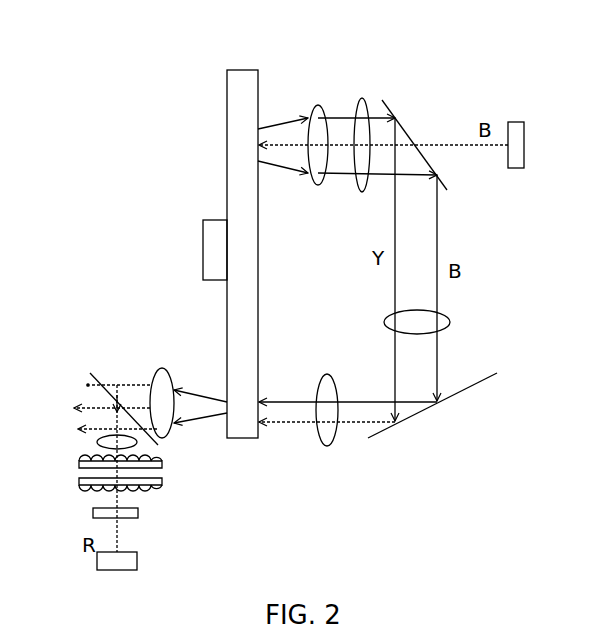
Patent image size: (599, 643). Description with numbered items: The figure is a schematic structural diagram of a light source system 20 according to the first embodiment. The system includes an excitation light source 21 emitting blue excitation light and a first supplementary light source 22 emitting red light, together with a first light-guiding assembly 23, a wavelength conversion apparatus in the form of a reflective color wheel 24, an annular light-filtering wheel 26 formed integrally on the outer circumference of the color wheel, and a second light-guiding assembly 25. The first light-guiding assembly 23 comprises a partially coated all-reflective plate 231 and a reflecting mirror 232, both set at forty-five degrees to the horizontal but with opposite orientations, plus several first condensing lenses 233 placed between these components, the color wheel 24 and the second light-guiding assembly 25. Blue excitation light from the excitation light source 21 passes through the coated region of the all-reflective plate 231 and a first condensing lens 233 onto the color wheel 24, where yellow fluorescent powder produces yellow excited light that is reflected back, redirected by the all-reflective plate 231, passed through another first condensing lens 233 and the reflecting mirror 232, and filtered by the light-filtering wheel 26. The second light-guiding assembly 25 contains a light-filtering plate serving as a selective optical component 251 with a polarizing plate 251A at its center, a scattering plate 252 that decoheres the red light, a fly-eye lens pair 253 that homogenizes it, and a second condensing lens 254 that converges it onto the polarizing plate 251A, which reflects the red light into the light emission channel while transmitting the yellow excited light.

The light source system 20 is at (263, 226).
The excitation light source 21 is at (525, 121).
The first supplementary light source 22 is at (139, 552).
The first light-guiding assembly 23 is at (456, 252).
The reflective color wheel 24 is at (263, 239).
The light-filtering wheel 26 is at (260, 69).
The second light-guiding assembly 25 is at (126, 435).
The all-reflective plate 231 is at (447, 189).
The reflecting mirror 232 is at (497, 373).
The first condensing lens 233 is at (320, 106).
The selective optical component (light-filtering plate) 251 is at (97, 381).
The polarizing plate 251A is at (86, 385).
The scattering plate 252 is at (93, 512).
The fly-eye lens pair 253 is at (79, 463).
The second condensing lens 254 is at (98, 439).